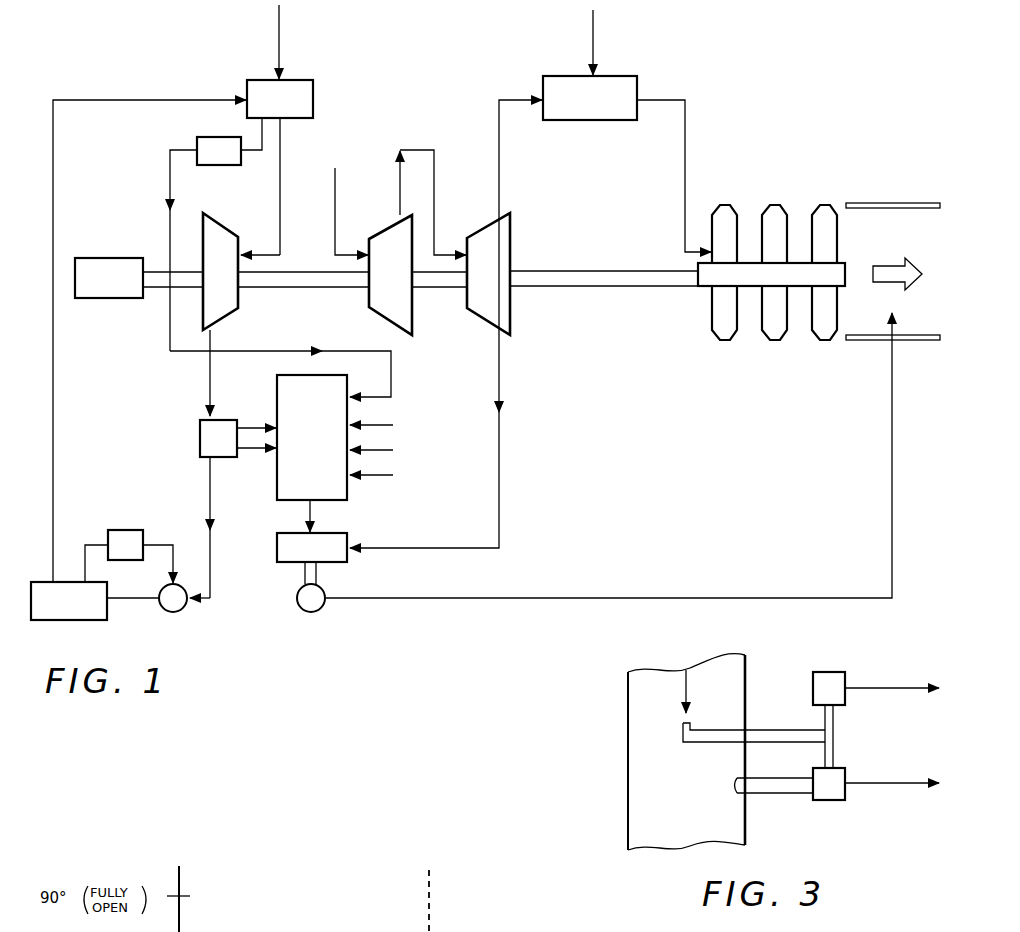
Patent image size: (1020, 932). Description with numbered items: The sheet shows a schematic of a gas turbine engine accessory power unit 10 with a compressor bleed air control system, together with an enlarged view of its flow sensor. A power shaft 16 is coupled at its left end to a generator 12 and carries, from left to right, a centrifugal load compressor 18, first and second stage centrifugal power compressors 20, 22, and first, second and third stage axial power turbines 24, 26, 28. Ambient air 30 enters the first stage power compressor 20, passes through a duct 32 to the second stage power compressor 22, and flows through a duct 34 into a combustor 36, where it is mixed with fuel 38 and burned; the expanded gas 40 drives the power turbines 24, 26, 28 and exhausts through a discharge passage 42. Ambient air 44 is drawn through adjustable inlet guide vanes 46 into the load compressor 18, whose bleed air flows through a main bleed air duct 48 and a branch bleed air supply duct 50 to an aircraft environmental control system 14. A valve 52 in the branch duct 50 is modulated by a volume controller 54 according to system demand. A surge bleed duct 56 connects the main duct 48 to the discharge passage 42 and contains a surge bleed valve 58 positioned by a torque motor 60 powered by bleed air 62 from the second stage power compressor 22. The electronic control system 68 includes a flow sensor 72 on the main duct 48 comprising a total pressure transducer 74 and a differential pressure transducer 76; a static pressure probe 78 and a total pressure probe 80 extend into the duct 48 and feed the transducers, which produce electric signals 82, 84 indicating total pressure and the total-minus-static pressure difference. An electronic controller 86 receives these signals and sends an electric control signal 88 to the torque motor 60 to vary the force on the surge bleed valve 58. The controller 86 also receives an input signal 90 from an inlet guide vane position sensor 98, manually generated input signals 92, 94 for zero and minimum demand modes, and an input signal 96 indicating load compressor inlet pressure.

In FIG. 1, the gas turbine engine accessory power unit 10 is at (738, 58).
In FIG. 1, the generator 12 is at (133, 258).
In FIG. 1, the aircraft environmental control system 14 is at (70, 620).
In FIG. 1, the power shaft 16 is at (622, 268).
In FIG. 1, the centrifugal load compressor 18 is at (222, 222).
In FIG. 1, the first stage centrifugal power compressor 20 is at (373, 238).
In FIG. 1, the second stage centrifugal power compressor 22 is at (470, 236).
In FIG. 1, the first stage axial power turbine 24 is at (726, 205).
In FIG. 1, the second stage axial power turbine 26 is at (776, 205).
In FIG. 1, the third stage axial power turbine 28 is at (826, 205).
In FIG. 1, the ambient air 30 is at (335, 215).
In FIG. 1, the duct 32 is at (418, 149).
In FIG. 1, the duct 34 is at (520, 100).
In FIG. 1, the combustor 36 is at (628, 76).
In FIG. 1, the fuel 38 is at (593, 30).
In FIG. 1, the expanded gas 40 is at (685, 124).
In FIG. 1, the discharge passage 42 is at (902, 203).
In FIG. 1, the ambient air 44 is at (279, 20).
In FIG. 1, the adjustable inlet guide vanes 46 is at (299, 80).
In FIG. 1, the main bleed air duct 48 is at (205, 370).
In FIG. 3, the main bleed air duct 48 is at (628, 712).
In FIG. 1, the branch bleed air supply duct 50 is at (136, 602).
In FIG. 1, the valve 52 is at (180, 612).
In FIG. 1, the volume controller 54 is at (132, 530).
In FIG. 1, the surge bleed duct 56 is at (244, 600).
In FIG. 1, the surge bleed valve 58 is at (312, 612).
In FIG. 1, the torque motor 60 is at (338, 562).
In FIG. 1, the bleed air 62 is at (499, 444).
In FIG. 1, the electronic control system 68 is at (172, 438).
In FIG. 1, the flow sensor 72 is at (200, 447).
In FIG. 3, the flow sensor 72 is at (886, 666).
In FIG. 3, the total pressure transducer 74 is at (824, 672).
In FIG. 3, the differential pressure transducer 76 is at (832, 800).
In FIG. 3, the static pressure probe 78 is at (772, 794).
In FIG. 3, the total pressure probe 80 is at (786, 730).
In FIG. 1, the electric signal 82 is at (250, 426).
In FIG. 3, the electric signal 82 is at (894, 688).
In FIG. 1, the electric signal 84 is at (252, 452).
In FIG. 3, the electric signal 84 is at (896, 786).
In FIG. 1, the electronic controller 86 is at (277, 488).
In FIG. 1, the electric control signal 88 is at (314, 512).
In FIG. 1, the input signal 90 is at (326, 350).
In FIG. 1, the input signal 92 is at (385, 425).
In FIG. 1, the input signal 94 is at (385, 450).
In FIG. 1, the input signal 96 is at (385, 475).
In FIG. 1, the inlet guide vane position sensor 98 is at (206, 137).